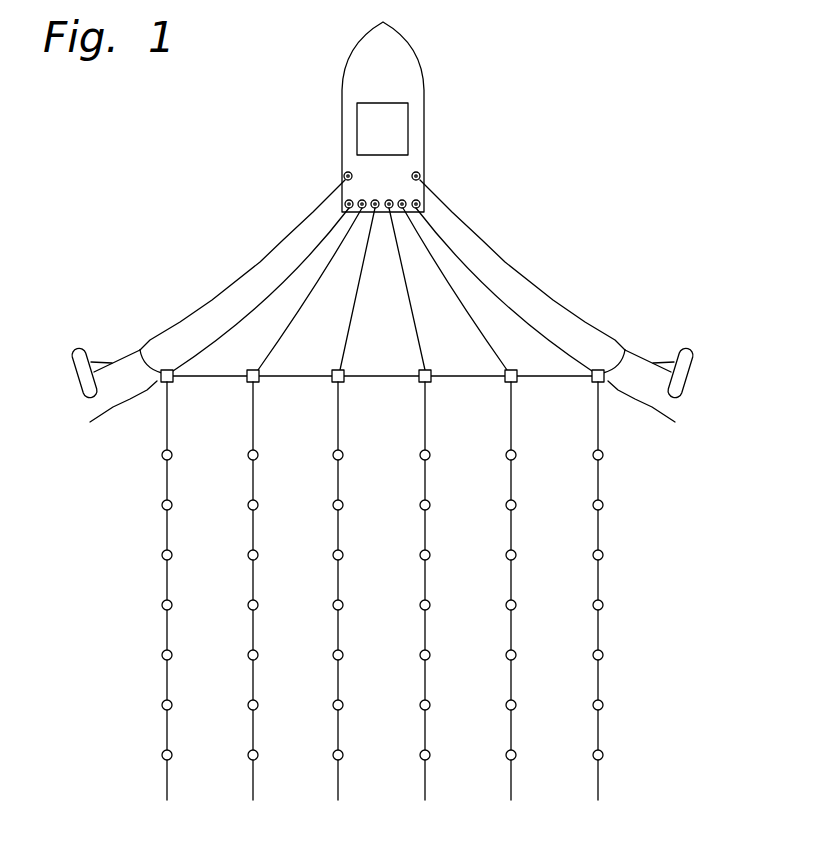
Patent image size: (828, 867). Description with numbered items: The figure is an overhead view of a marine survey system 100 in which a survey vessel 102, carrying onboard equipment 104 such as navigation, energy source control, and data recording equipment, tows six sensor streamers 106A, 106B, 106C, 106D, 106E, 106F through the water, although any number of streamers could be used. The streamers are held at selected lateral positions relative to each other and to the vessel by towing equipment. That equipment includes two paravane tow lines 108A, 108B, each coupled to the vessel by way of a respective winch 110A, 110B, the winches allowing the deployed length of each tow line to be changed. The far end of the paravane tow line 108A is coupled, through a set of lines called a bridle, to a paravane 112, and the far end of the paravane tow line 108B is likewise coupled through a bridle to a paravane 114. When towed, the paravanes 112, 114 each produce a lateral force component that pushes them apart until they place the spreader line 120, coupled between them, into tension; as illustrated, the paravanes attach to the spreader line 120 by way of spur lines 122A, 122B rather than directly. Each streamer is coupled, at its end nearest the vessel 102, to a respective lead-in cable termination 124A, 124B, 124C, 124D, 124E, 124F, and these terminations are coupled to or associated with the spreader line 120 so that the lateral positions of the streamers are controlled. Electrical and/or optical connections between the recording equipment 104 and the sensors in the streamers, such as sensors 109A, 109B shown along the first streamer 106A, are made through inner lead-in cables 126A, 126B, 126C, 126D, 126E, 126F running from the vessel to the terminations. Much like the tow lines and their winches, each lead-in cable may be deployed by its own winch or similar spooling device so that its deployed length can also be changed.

The marine survey system 100 is at (138, 146).
The survey vessel 102 is at (346, 64).
The onboard equipment 104 is at (386, 102).
The sensor streamer 106A is at (125, 606).
The sensor streamer 106B is at (253, 778).
The sensor streamer 106C is at (338, 778).
The sensor streamer 106D is at (425, 778).
The sensor streamer 106E is at (511, 778).
The sensor streamer 106F is at (598, 778).
The paravane tow line 108A is at (310, 213).
The paravane tow line 108B is at (455, 213).
The sensor 109A is at (161, 456).
The sensor 109B is at (161, 506).
The winch 110A is at (344, 175).
The winch 110B is at (421, 175).
The paravane 112 is at (77, 373).
The paravane 114 is at (688, 373).
The spreader line 120 is at (371, 379).
The spur line 122A is at (96, 414).
The spur line 122B is at (670, 414).
The lead-in cable termination 124A is at (154, 384).
The lead-in cable termination 124B is at (240, 384).
The lead-in cable termination 124C is at (325, 384).
The lead-in cable termination 124D is at (432, 384).
The lead-in cable termination 124E is at (518, 384).
The lead-in cable termination 124F is at (605, 384).
The inner lead-in cable 126A is at (317, 243).
The inner lead-in cable 126B is at (325, 280).
The inner lead-in cable 126C is at (347, 338).
The inner lead-in cable 126D is at (418, 338).
The inner lead-in cable 126E is at (440, 280).
The inner lead-in cable 126F is at (448, 243).